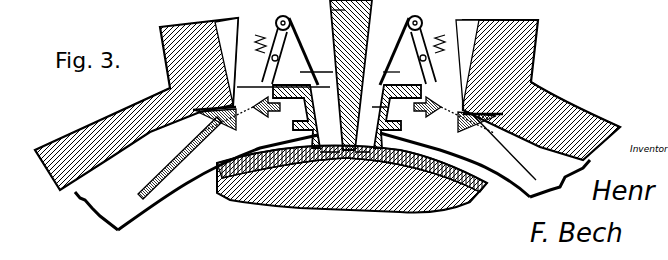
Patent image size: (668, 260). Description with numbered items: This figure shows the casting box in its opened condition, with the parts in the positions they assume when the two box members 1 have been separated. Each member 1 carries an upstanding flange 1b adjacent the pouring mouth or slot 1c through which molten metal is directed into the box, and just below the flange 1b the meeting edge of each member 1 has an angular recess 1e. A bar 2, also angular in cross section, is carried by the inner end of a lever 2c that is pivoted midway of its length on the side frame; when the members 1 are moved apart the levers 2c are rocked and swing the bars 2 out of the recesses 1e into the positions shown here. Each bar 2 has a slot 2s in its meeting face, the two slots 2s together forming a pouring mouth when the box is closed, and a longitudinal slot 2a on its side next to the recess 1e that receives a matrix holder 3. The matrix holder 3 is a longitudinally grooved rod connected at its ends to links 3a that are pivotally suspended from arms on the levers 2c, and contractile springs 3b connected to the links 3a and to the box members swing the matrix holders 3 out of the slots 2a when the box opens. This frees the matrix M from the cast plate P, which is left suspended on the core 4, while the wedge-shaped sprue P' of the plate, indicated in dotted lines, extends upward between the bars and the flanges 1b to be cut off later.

The member 1 is at (90, 117).
The upstanding flange 1b is at (227, 23).
The mouth or slot 1c is at (222, 112).
The recess 1e is at (210, 122).
The bar 2 is at (305, 145).
The longitudinal slot 2a is at (283, 123).
The lever 2c is at (110, 208).
The slot 2s is at (320, 112).
The matrix holder 3 is at (262, 86).
The link 3a is at (410, 43).
The contractile spring 3b is at (258, 32).
The core 4 is at (410, 196).
The matrix M is at (157, 194).
The plate P is at (352, 188).
The sprue of the plate P' is at (393, 8).